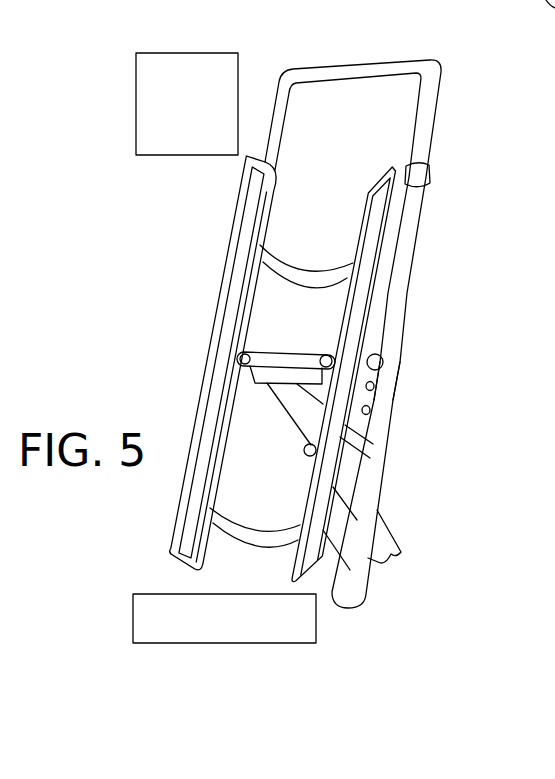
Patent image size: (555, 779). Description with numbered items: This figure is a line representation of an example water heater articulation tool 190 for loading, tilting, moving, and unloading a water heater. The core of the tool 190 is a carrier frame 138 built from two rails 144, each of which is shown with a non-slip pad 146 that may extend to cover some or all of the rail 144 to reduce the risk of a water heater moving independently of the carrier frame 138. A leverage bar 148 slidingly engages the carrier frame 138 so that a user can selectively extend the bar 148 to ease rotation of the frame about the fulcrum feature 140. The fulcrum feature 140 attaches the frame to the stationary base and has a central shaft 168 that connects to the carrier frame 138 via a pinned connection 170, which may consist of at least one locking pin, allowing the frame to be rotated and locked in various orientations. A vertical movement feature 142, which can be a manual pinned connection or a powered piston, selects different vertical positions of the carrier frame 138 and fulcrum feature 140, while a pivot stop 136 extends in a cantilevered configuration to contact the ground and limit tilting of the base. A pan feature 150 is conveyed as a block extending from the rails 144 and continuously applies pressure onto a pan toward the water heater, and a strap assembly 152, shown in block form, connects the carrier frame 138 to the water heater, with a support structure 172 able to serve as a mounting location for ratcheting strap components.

The pivot stop 136 is at (548, 52).
The carrier frame 138 is at (458, 290).
The fulcrum feature 140 is at (396, 400).
The vertical movement feature 142 is at (404, 521).
The rail 144 is at (207, 357).
The non-slip pad 146 is at (222, 315).
The leverage bar 148 is at (343, 66).
The pan feature 150 is at (304, 570).
The strap assembly 152 is at (238, 197).
The central shaft 168 is at (300, 352).
The pinned connection 170 is at (384, 361).
The support structure 172 is at (304, 268).
The tool 190 is at (175, 34).